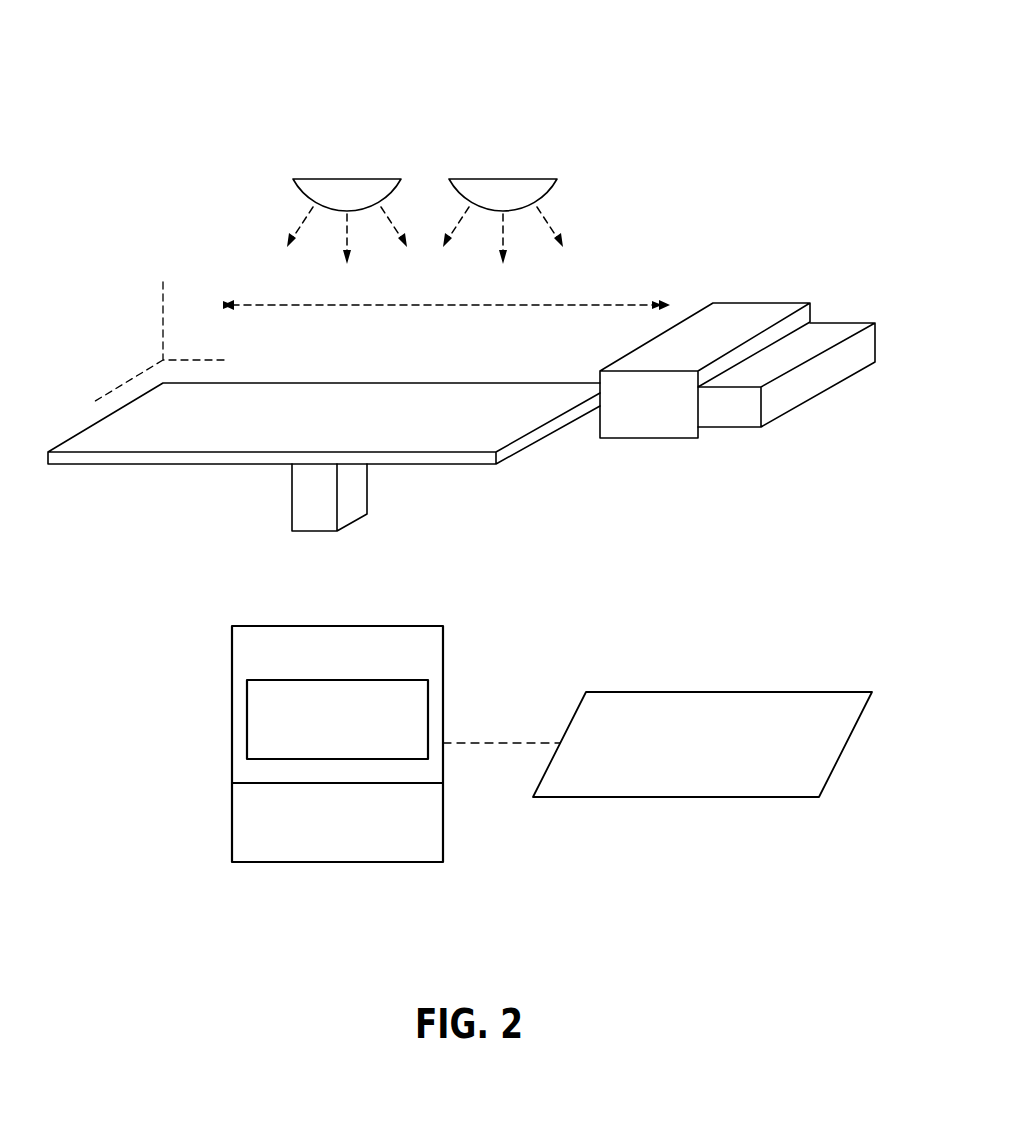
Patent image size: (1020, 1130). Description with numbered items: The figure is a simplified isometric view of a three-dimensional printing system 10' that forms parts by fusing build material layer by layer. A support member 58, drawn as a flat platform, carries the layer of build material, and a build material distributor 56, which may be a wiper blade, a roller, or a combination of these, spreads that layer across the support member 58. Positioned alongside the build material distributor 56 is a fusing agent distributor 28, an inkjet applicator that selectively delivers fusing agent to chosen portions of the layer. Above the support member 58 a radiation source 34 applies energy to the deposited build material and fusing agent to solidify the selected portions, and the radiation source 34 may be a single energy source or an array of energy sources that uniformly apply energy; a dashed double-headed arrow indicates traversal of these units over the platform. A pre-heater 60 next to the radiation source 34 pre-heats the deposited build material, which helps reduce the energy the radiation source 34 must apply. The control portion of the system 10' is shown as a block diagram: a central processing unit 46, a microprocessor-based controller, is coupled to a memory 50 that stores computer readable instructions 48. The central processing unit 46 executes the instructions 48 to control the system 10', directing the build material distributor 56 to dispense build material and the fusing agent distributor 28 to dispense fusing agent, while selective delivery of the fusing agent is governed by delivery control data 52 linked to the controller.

The printing system 10' is at (406, 214).
The radiation source 34 is at (347, 178).
The pre-heater 60 is at (503, 178).
The support member 58 is at (383, 383).
The build material distributor 56 is at (762, 303).
The fusing agent distributor 28 is at (842, 322).
The memory 50 is at (248, 653).
The computer readable instructions 48 is at (247, 718).
The central processing unit 46 is at (232, 822).
The delivery control data 52 is at (726, 692).